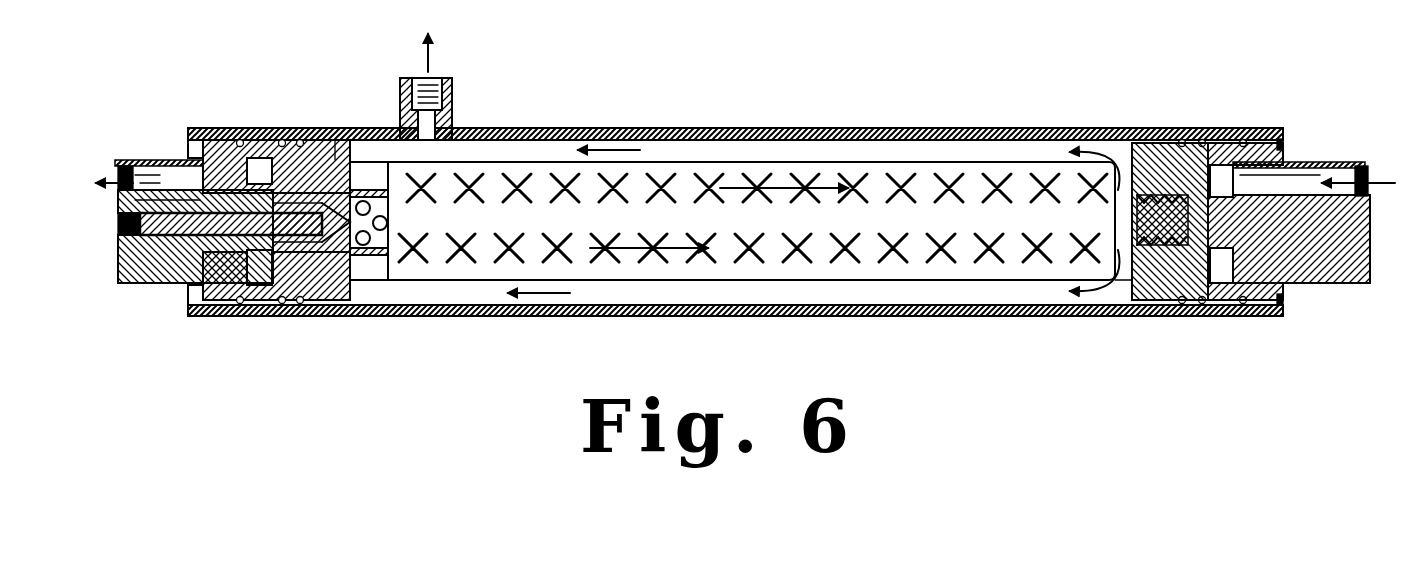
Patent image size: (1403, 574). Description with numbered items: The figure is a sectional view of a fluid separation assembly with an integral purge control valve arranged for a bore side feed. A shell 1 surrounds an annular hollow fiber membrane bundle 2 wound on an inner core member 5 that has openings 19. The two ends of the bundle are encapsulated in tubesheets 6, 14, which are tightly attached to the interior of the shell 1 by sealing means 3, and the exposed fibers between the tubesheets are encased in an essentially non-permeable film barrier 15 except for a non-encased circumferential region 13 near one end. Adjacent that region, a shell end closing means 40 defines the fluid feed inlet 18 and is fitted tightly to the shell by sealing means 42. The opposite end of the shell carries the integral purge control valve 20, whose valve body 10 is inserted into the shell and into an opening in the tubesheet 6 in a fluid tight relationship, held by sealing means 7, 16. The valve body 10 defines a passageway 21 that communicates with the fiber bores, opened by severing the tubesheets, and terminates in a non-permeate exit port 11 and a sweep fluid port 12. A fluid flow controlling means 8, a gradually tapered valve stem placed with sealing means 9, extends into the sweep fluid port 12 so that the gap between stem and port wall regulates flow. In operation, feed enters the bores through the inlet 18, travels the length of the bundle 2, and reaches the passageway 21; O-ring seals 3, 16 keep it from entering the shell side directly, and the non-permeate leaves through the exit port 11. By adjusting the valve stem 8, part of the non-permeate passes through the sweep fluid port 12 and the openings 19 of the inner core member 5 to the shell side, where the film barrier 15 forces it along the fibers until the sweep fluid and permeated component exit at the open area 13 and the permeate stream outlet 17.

The shell 1 is at (690, 128).
The hollow fiber membrane bundle 2 is at (900, 192).
The sealing means 3 is at (300, 140).
The inner core member 5 is at (378, 258).
The tubesheet 6 is at (327, 302).
The sealing means 7 is at (246, 140).
The fluid flow controlling means 8 is at (112, 240).
The sealing means 9 is at (162, 170).
The valve body 10 is at (227, 180).
The non-permeate exit port 11 is at (127, 165).
The sweep fluid port 12 is at (212, 300).
The non-encased circumferential region 13 is at (1124, 305).
The tubesheet 14 is at (1170, 302).
The film barrier 15 is at (790, 162).
The sealing means 16 is at (336, 140).
The permeate stream outlet 17 is at (450, 108).
The fluid feed inlet 18 is at (1362, 164).
The openings 19 is at (395, 228).
The integral purge control valve 20 is at (175, 285).
The passageway 21 is at (178, 192).
The shell end closing means 40 is at (1370, 285).
The sealing means 42 is at (1244, 140).